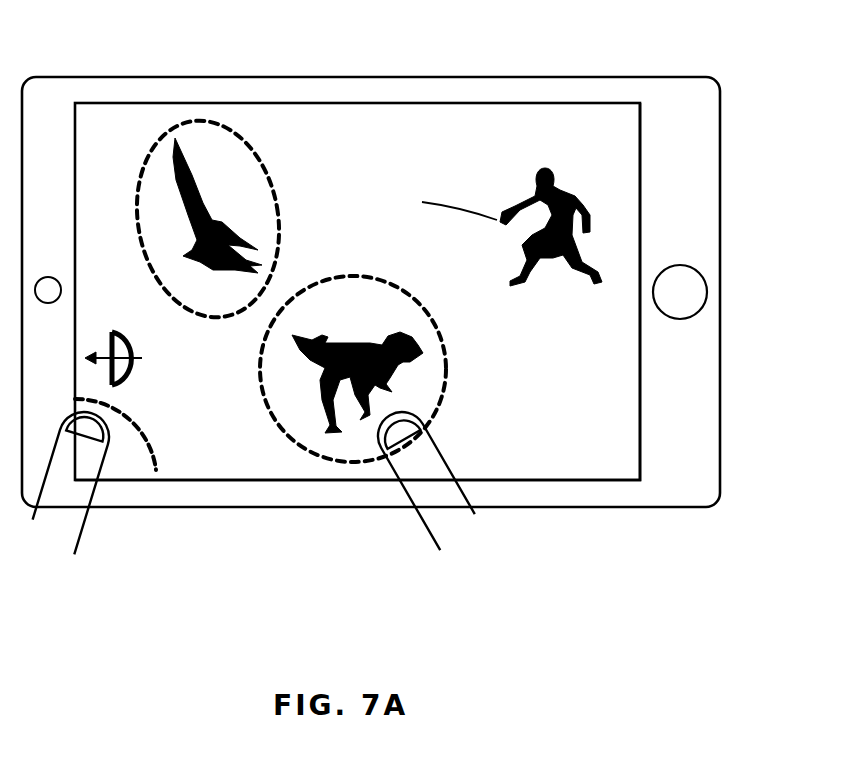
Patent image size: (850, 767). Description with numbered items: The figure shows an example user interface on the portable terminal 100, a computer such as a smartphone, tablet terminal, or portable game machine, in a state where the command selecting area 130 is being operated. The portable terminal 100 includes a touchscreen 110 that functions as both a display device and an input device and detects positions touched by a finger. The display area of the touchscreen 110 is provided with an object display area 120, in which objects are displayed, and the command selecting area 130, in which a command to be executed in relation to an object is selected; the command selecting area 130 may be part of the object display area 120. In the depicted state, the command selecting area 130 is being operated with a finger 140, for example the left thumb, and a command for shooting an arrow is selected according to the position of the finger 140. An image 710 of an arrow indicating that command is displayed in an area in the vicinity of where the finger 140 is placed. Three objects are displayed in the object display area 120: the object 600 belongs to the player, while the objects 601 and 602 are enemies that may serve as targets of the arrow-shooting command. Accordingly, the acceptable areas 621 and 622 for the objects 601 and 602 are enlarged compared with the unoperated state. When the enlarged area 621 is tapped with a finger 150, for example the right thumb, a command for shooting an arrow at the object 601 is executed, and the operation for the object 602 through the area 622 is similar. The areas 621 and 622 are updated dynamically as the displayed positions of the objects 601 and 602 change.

The portable terminal 100 is at (705, 149).
The touchscreen 110 is at (387, 122).
The object display area 120 is at (557, 453).
The command selecting area 130 is at (143, 473).
The finger 140 is at (75, 535).
The finger 150 is at (440, 517).
The object 600 is at (545, 166).
The object 601 is at (352, 343).
The object 602 is at (203, 200).
The area 621 is at (448, 357).
The area 622 is at (277, 212).
The image of an arrow 710 is at (133, 372).